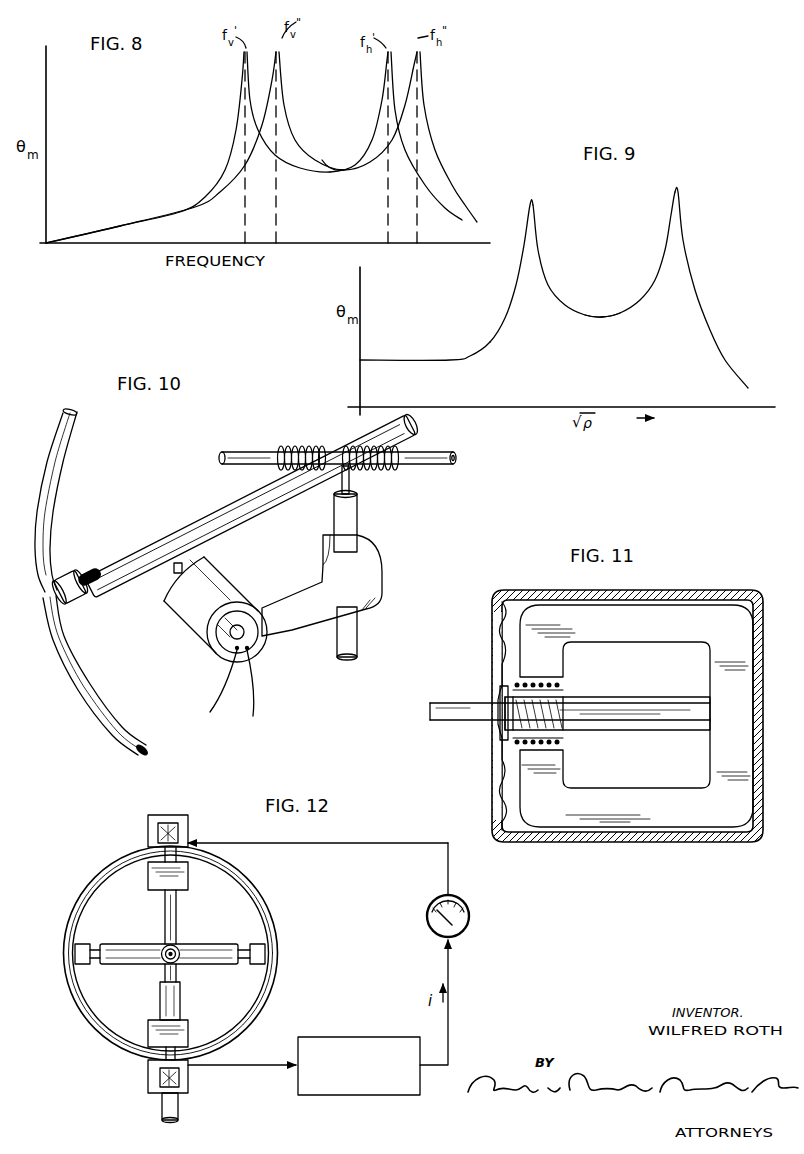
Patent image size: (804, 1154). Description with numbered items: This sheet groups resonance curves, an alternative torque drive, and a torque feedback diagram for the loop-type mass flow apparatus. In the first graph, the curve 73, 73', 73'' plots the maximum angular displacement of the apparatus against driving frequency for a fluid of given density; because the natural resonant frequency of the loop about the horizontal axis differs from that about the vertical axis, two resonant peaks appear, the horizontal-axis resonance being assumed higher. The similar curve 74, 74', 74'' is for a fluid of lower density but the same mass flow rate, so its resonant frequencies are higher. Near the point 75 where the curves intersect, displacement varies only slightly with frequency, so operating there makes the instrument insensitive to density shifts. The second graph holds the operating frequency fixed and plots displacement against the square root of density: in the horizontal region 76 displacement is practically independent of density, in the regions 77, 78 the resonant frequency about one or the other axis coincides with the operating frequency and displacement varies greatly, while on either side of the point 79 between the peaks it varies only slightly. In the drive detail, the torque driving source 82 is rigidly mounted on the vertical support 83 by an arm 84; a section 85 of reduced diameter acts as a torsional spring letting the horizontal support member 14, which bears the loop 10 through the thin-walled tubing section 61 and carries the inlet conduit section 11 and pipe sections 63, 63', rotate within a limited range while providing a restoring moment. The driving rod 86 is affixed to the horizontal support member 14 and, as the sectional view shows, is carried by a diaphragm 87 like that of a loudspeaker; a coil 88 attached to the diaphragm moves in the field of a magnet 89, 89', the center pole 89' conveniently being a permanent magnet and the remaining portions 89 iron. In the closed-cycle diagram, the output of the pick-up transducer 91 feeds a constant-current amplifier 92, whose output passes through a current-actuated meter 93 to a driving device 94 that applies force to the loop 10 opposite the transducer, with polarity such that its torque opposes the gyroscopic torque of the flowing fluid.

In FIG. 8, the resonant response curve 73 is at (145, 147).
In FIG. 8, the resonant response curve portion 73' is at (288, 106).
In FIG. 8, the resonant response curve portion 73'' is at (396, 125).
In FIG. 8, the resonant response curve 74 is at (181, 147).
In FIG. 8, the resonant response curve portion 74' is at (348, 111).
In FIG. 8, the resonant response curve portion 74'' is at (448, 137).
In FIG. 8, the intersection point 75 is at (330, 170).
In FIG. 9, the horizontal region 76 is at (397, 360).
In FIG. 9, the resonant region 77 is at (531, 222).
In FIG. 9, the resonant region 78 is at (679, 213).
In FIG. 9, the intermediate point 79 is at (604, 316).
In FIG. 10, the fluid conduit loop 10 is at (72, 428).
In FIG. 12, the fluid conduit loop 10 is at (110, 866).
In FIG. 10, the inlet fluid conduit section 11 is at (138, 526).
In FIG. 10, the horizontal support member 14 is at (217, 500).
In FIG. 12, the horizontal support member 14 is at (204, 926).
In FIG. 10, the thin-walled tubing section 61 is at (90, 570).
In FIG. 10, the pipe section 63 is at (337, 450).
In FIG. 10, the pipe section 63' is at (411, 452).
In FIG. 10, the torque driving source 82 is at (172, 614).
In FIG. 10, the vertical support 83 is at (358, 516).
In FIG. 10, the arm 84 is at (378, 588).
In FIG. 10, the reduced-diameter section 85 is at (351, 482).
In FIG. 10, the driving rod 86 is at (185, 556).
In FIG. 11, the driving rod 86 is at (464, 723).
In FIG. 11, the diaphragm 87 is at (498, 668).
In FIG. 11, the coil 88 is at (563, 686).
In FIG. 11, the magnet portions 89 is at (636, 716).
In FIG. 11, the center pole 89' is at (607, 703).
In FIG. 12, the pick-up transducer 91 is at (188, 1076).
In FIG. 12, the amplifier 92 is at (357, 1036).
In FIG. 12, the current-actuated meter 93 is at (468, 918).
In FIG. 12, the driving device 94 is at (187, 836).